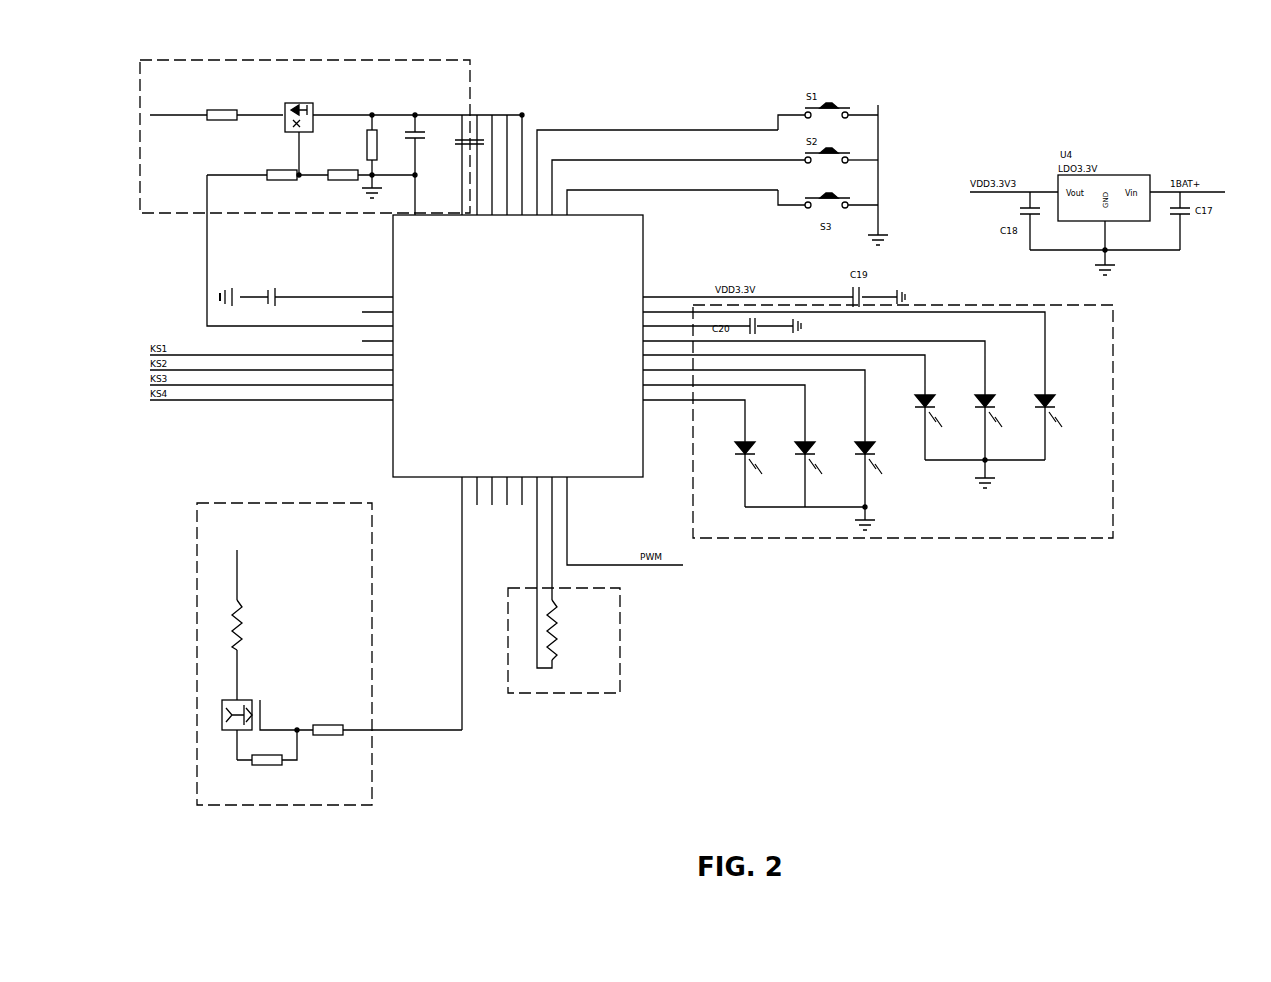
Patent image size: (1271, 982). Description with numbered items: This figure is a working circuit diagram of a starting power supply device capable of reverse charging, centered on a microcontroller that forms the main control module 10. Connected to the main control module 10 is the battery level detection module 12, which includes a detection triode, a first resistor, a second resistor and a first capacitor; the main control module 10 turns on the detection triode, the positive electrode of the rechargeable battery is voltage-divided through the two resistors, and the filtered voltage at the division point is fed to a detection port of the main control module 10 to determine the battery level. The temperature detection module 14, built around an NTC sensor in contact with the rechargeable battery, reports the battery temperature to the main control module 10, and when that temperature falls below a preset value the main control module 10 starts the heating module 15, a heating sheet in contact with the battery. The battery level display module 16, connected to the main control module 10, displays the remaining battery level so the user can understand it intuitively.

The main control module 10 is at (393, 465).
The battery level detection module 12 is at (470, 95).
The temperature detection module 14 is at (590, 693).
The heating module 15 is at (197, 690).
The battery level display module 16 is at (1113, 398).